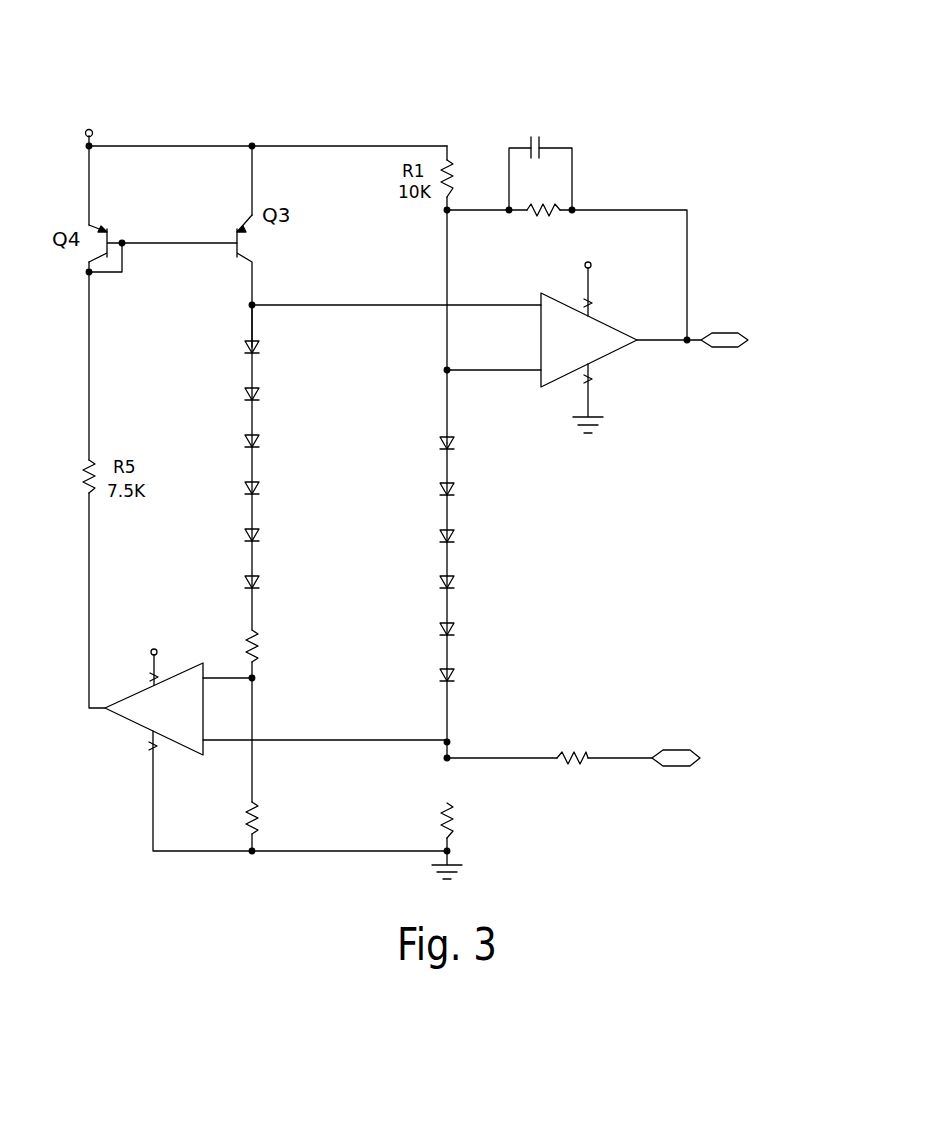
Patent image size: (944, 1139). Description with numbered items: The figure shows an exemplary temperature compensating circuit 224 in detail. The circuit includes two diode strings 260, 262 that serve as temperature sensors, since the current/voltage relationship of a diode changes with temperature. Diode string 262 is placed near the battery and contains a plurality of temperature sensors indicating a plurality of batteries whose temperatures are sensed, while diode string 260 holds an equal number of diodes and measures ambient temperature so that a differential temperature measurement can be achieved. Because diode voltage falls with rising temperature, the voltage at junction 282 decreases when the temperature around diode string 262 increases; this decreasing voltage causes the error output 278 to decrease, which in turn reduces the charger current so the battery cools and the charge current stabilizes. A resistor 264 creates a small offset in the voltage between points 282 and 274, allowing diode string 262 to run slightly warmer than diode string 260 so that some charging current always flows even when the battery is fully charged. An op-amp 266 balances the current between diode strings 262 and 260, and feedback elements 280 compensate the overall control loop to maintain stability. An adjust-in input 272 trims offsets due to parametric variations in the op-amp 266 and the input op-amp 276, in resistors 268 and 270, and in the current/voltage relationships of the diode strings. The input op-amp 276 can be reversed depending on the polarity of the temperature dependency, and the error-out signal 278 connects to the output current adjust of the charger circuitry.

The temperature compensating circuit 224 is at (320, 58).
The diode string 260 is at (444, 517).
The diode string 262 is at (250, 513).
The resistor 264 is at (255, 665).
The op-amp 266 is at (195, 757).
The resistor 268 is at (252, 803).
The resistor 270 is at (442, 815).
The adjust-in input 272 is at (672, 752).
The point 274 is at (447, 370).
The op-amp 276 is at (604, 355).
The error output 278 is at (722, 348).
The feedback elements 280 is at (572, 178).
The junction 282 is at (252, 305).